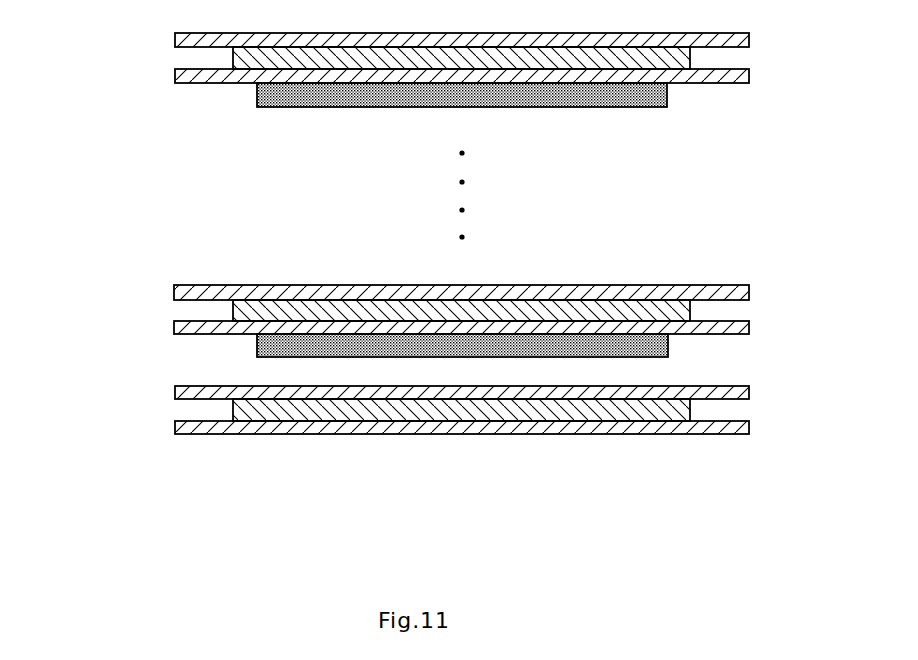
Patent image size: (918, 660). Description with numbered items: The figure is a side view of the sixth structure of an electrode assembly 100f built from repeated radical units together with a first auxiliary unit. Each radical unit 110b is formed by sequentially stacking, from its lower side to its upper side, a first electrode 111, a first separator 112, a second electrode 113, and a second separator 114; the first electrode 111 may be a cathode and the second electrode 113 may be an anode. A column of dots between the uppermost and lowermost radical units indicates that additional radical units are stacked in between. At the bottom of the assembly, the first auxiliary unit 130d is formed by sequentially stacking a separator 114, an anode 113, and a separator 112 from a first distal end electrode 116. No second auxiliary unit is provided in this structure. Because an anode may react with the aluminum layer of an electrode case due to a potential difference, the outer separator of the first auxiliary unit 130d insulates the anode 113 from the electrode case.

The electrode assembly 100f is at (750, 21).
The radical unit 110b is at (100, 27).
The first electrode 111 is at (262, 90).
The first separator 112 is at (177, 74).
The second electrode 113 is at (238, 58).
The second separator 114 is at (177, 40).
The first distal end electrode 116 is at (260, 348).
The first auxiliary unit 130d is at (238, 412).